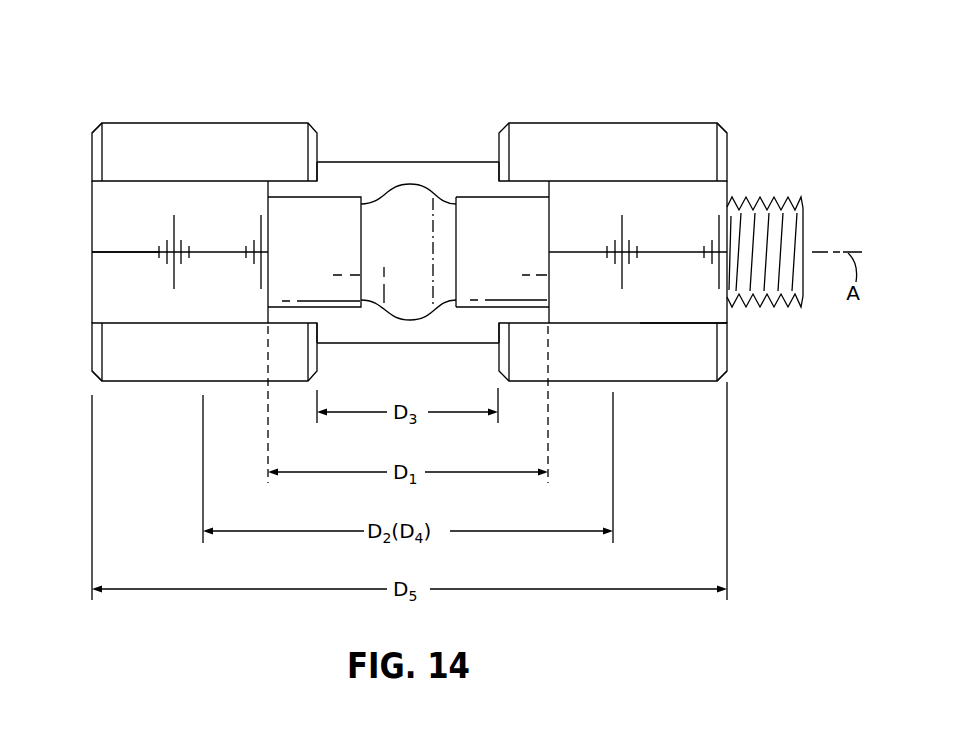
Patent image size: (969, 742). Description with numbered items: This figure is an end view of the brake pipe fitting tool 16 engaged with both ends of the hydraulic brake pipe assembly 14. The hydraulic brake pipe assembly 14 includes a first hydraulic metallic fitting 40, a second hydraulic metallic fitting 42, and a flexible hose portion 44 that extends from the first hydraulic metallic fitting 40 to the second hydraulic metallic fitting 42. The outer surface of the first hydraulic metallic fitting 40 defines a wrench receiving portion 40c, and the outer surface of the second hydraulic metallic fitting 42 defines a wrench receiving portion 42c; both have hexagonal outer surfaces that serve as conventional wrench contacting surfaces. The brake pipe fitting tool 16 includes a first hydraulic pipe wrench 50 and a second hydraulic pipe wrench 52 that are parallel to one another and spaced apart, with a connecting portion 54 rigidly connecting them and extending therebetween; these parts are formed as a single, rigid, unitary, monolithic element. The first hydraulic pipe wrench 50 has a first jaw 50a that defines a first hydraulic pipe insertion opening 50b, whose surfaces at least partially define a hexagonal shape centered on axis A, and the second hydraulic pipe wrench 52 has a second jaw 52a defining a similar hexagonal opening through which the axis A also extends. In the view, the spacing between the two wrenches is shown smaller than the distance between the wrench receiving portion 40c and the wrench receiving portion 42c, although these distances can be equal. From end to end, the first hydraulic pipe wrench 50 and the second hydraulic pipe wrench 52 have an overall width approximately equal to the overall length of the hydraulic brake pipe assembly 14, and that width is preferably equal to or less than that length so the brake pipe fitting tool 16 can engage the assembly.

The hydraulic brake pipe assembly 14 is at (467, 187).
The brake pipe fitting tool 16 is at (565, 114).
The first hydraulic metallic fitting 40 is at (223, 292).
The wrench receiving portion 40c is at (142, 277).
The second hydraulic metallic fitting 42 is at (582, 288).
The wrench receiving portion 42c is at (667, 275).
The flexible hose portion 44 is at (398, 205).
The first hydraulic pipe wrench 50 is at (230, 153).
The first jaw 50a is at (117, 182).
The first hydraulic pipe insertion opening 50b is at (117, 323).
The second hydraulic pipe wrench 52 is at (651, 152).
The second jaw 52a is at (707, 182).
The connecting portion 54 is at (370, 327).